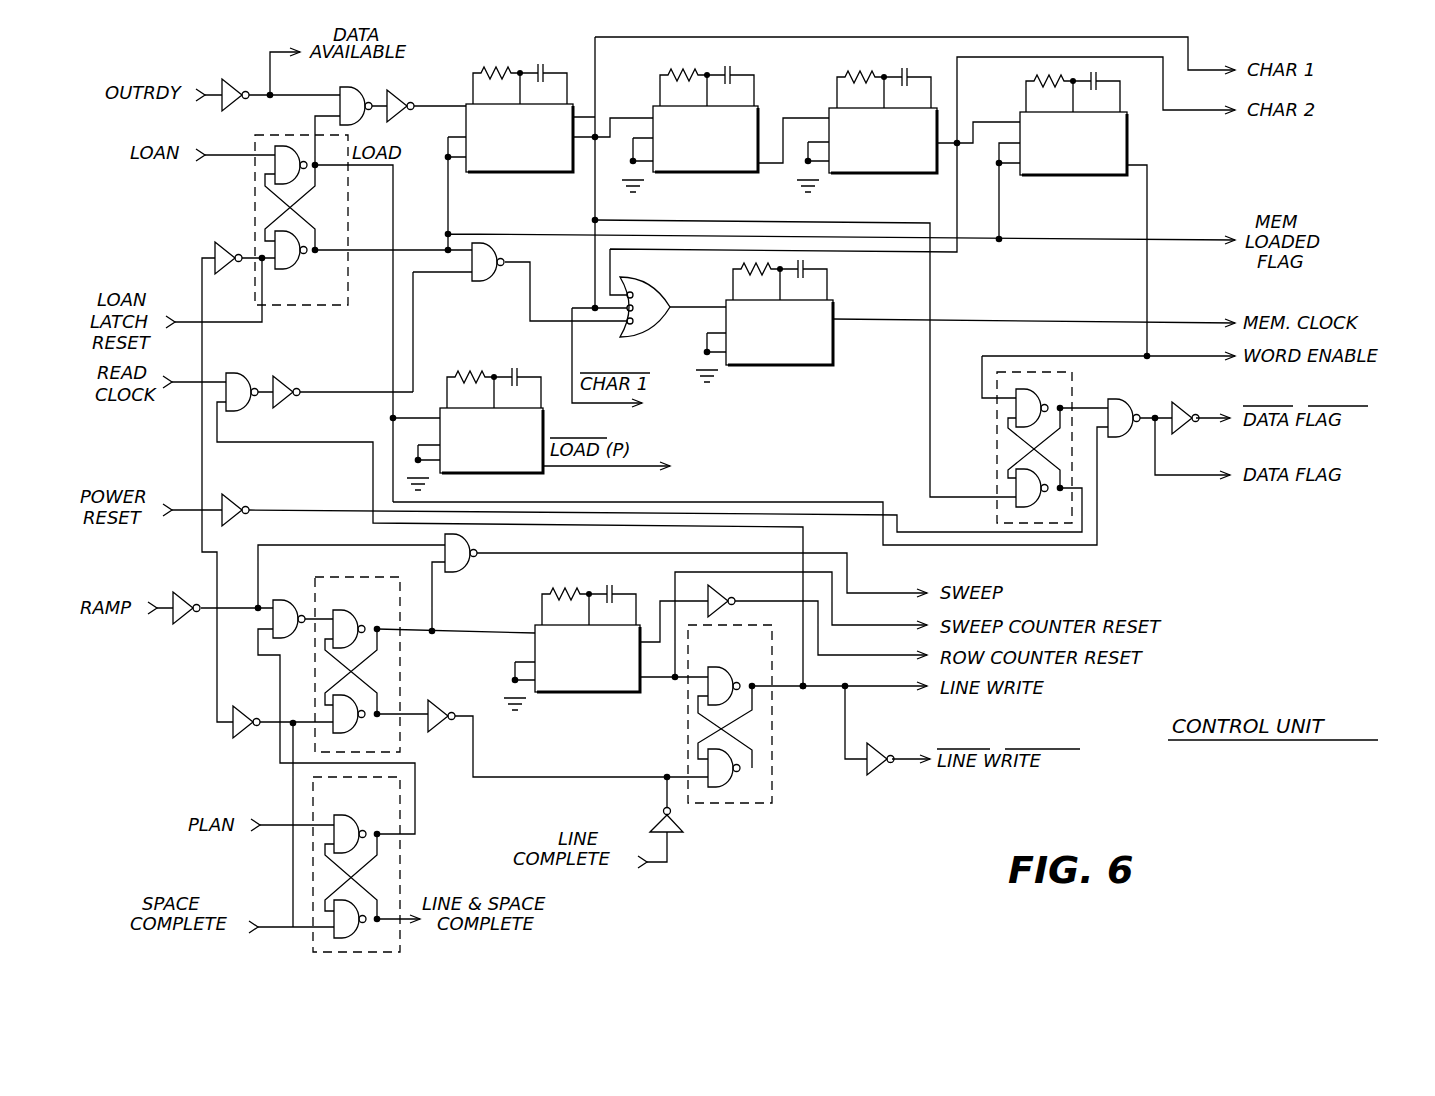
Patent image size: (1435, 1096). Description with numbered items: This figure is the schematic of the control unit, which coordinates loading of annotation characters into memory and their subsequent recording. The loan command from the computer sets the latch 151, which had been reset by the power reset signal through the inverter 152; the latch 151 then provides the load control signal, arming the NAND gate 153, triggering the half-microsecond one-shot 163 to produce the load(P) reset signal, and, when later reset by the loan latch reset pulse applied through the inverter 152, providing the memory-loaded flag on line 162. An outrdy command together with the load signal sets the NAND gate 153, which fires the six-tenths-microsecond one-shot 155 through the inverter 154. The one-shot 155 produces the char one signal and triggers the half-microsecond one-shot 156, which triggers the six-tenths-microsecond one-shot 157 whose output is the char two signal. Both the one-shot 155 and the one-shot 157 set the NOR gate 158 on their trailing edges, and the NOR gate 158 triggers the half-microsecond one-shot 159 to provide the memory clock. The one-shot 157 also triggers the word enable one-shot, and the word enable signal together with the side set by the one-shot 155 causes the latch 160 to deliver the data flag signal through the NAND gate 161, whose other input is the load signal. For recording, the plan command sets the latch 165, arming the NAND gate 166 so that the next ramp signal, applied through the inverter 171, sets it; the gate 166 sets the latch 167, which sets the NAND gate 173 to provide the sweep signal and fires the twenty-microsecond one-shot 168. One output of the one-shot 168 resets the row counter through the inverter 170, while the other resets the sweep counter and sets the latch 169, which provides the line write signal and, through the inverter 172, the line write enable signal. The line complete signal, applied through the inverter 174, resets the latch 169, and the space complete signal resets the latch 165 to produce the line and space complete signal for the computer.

The latch 151 is at (255, 190).
The inverter 152 is at (213, 247).
The NAND gate 153 is at (338, 103).
The inverter 154 is at (404, 97).
The 0.6-microsecond one-shot 155 is at (510, 173).
The 0.5-microsecond one-shot 156 is at (700, 175).
The 0.6-microsecond one-shot 157 is at (872, 175).
The NOR gate 158 is at (650, 285).
The 0.5-microsecond one-shot 159 is at (780, 366).
The latch 160 is at (1057, 176).
The NAND gate 161 is at (1128, 410).
The line 162 is at (433, 248).
The 0.5-microsecond one-shot 163 is at (545, 422).
The latch 165 is at (403, 870).
The NAND gate 166 is at (287, 598).
The latch 167 is at (402, 667).
The 20-microsecond one-shot 168 is at (573, 693).
The latch 169 is at (687, 738).
The inverter 170 is at (725, 594).
The inverter 171 is at (182, 590).
The inverter 172 is at (867, 771).
The NAND gate 173 is at (468, 573).
The inverter 174 is at (683, 825).